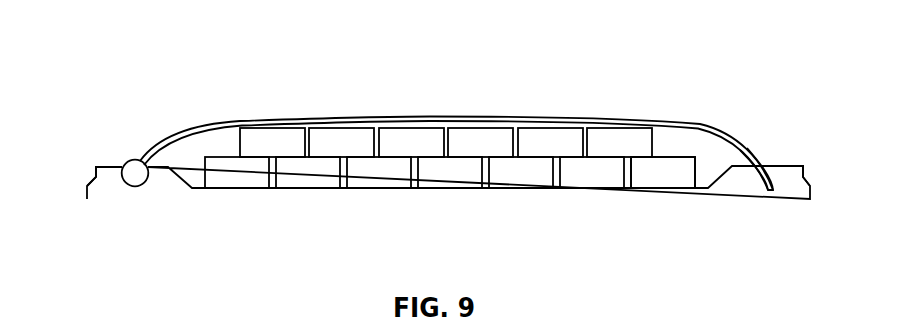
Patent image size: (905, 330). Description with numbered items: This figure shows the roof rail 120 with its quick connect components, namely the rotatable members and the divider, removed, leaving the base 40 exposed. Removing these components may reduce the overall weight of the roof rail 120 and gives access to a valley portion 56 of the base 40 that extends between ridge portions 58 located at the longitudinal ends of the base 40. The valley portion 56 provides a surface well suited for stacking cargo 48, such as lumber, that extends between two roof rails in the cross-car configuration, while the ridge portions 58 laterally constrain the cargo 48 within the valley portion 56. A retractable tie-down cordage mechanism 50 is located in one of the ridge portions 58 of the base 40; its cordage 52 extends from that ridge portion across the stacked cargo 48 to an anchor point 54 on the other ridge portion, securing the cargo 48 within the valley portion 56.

The roof rail 120 is at (92, 70).
The base 40 is at (592, 200).
The ridge portions 58 is at (102, 167).
The retractable tie-down cordage mechanism 50 is at (137, 182).
The cargo 48 is at (322, 177).
The valley portion 56 is at (648, 183).
The cordage 52 is at (418, 117).
The anchor point 54 is at (768, 200).